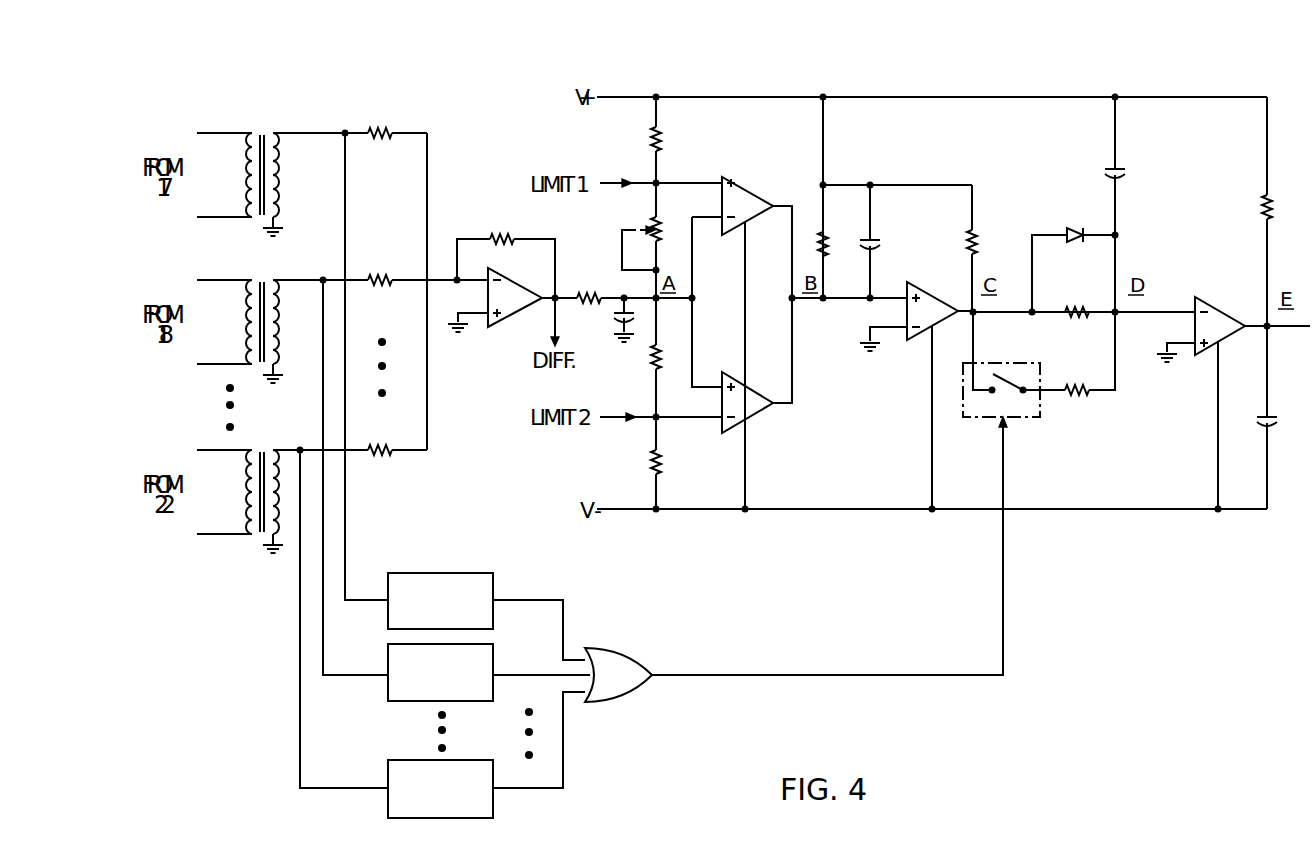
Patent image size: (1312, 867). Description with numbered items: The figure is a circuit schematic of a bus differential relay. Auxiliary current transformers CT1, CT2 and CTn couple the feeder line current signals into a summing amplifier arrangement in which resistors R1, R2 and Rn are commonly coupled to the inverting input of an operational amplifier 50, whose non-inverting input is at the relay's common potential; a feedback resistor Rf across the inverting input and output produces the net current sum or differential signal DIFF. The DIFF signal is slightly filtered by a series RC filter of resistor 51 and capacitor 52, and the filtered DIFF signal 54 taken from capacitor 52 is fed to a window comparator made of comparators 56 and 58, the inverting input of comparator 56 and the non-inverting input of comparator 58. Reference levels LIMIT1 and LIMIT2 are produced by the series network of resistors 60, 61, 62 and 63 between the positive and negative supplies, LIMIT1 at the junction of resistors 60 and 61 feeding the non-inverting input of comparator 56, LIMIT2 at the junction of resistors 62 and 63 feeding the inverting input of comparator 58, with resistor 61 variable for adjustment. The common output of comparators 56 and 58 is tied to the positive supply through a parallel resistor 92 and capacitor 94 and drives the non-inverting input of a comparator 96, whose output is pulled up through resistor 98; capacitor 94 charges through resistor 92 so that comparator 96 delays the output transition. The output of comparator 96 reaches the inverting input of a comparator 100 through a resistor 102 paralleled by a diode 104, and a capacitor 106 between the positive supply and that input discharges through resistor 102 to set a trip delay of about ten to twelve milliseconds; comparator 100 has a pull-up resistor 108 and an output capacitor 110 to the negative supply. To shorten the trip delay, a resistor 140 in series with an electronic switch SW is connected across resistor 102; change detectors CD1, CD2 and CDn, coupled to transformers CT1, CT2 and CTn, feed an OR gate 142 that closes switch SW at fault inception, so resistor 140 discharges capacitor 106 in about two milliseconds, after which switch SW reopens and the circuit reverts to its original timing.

The auxiliary current transformer CT1 is at (271, 131).
The auxiliary current transformer CT2 is at (271, 278).
The auxiliary current transformer CTn is at (271, 448).
The summing resistor R1 is at (370, 131).
The summing resistor R2 is at (370, 278).
The summing resistor Rn is at (370, 448).
The feedback resistor Rf is at (485, 232).
The operational amplifier 50 is at (500, 272).
The resistor 51 is at (593, 294).
The capacitor 52 is at (612, 320).
The filtered DIFF signal 54 is at (682, 300).
The comparator 56 is at (735, 183).
The comparator 58 is at (762, 400).
The resistor 60 is at (645, 134).
The variable resistor 61 is at (645, 224).
The resistor 62 is at (650, 354).
The resistor 63 is at (665, 464).
The resistor 92 is at (830, 242).
The capacitor 94 is at (881, 242).
The comparator 96 is at (917, 288).
The resistor 98 is at (966, 242).
The comparator 100 is at (1207, 300).
The resistor 102 is at (1084, 310).
The diode 104 is at (1072, 225).
The capacitor 106 is at (1104, 173).
The resistor 108 is at (1251, 200).
The capacitor 110 is at (1250, 424).
The resistor 140 is at (1089, 390).
The OR gate 142 is at (645, 664).
The electronic switch SW is at (1033, 419).
The change detector CD1 is at (472, 574).
The change detector CD2 is at (478, 644).
The change detector CDn is at (462, 760).